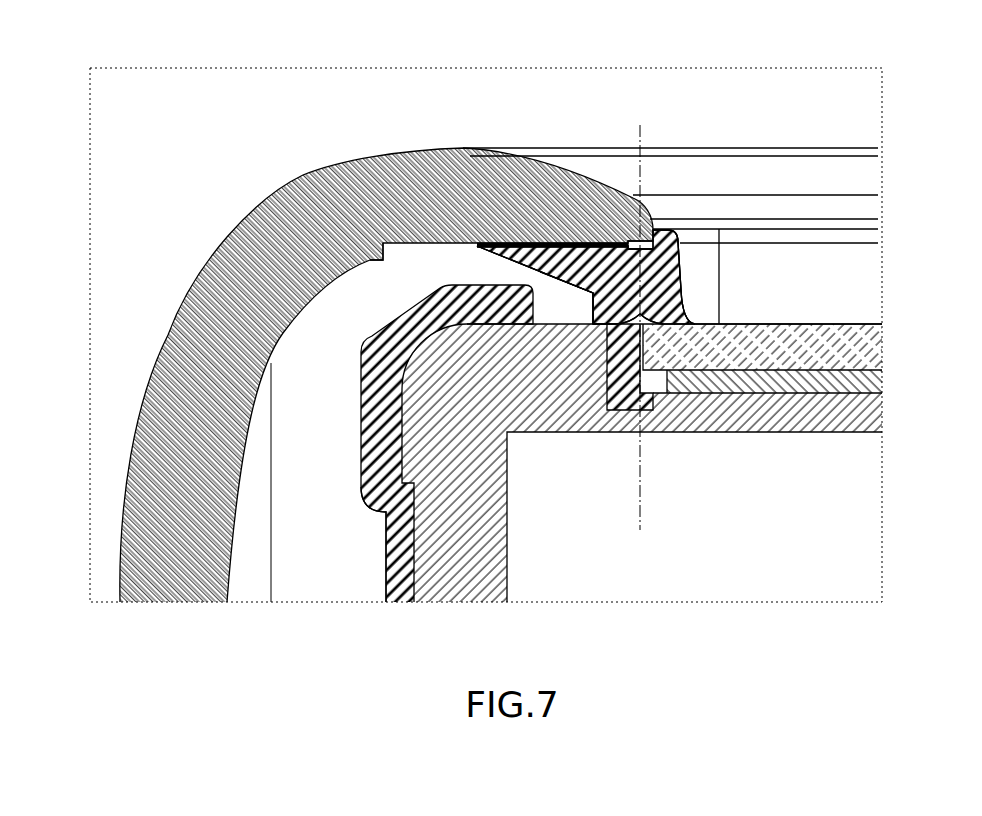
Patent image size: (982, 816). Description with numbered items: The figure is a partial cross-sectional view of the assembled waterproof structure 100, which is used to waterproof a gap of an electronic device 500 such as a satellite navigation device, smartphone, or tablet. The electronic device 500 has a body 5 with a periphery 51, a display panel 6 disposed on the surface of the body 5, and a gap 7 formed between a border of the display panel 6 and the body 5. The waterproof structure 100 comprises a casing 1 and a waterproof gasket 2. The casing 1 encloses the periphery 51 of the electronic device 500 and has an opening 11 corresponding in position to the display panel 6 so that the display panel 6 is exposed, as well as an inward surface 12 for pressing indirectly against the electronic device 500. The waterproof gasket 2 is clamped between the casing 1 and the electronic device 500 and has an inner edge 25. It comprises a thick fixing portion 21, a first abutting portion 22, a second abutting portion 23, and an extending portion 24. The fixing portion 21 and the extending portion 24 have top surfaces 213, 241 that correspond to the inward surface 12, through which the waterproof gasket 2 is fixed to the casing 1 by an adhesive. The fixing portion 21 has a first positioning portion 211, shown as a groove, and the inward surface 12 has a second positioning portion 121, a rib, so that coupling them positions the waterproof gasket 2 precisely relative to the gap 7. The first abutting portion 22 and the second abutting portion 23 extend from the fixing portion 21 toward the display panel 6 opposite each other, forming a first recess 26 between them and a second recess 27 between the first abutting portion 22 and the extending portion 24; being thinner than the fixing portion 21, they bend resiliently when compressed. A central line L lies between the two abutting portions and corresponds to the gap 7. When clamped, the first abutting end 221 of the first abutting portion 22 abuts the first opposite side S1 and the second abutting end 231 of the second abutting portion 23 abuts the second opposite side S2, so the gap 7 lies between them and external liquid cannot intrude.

The waterproof structure 100 is at (243, 187).
The casing 1 is at (233, 233).
The inward surface 12 is at (411, 252).
The second positioning portion 121 is at (645, 247).
The waterproof gasket 2 is at (718, 258).
The fixing portion 21 is at (680, 256).
The first positioning portion 211 is at (608, 238).
The top surface of fixing portion 213 is at (572, 236).
The first abutting portion 22 is at (596, 322).
The first abutting end 221 is at (553, 277).
The second abutting portion 23 is at (693, 325).
The second abutting end 231 is at (681, 310).
The extending portion 24 is at (522, 258).
The top surface of extending portion 241 is at (507, 238).
The inner edge 25 is at (682, 281).
The first recess 26 is at (648, 326).
The second recess 27 is at (580, 307).
The body 5 is at (353, 443).
The periphery 51 is at (383, 543).
The electronic device 500 is at (287, 540).
The display panel 6 is at (865, 348).
The gap 7 is at (636, 338).
The opening 11 is at (856, 198).
The first opposite side S1 is at (538, 238).
The second opposite side S2 is at (836, 324).
The central line L is at (637, 132).